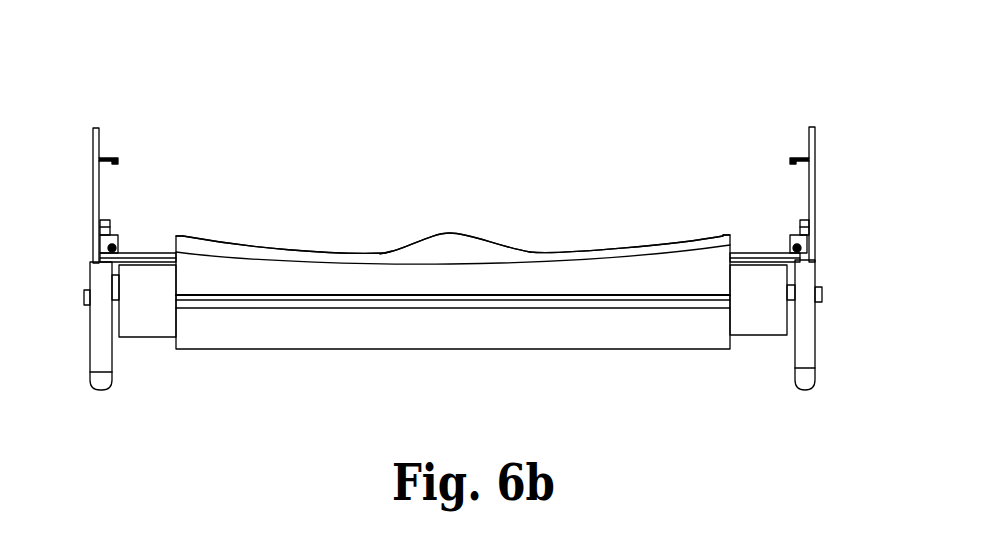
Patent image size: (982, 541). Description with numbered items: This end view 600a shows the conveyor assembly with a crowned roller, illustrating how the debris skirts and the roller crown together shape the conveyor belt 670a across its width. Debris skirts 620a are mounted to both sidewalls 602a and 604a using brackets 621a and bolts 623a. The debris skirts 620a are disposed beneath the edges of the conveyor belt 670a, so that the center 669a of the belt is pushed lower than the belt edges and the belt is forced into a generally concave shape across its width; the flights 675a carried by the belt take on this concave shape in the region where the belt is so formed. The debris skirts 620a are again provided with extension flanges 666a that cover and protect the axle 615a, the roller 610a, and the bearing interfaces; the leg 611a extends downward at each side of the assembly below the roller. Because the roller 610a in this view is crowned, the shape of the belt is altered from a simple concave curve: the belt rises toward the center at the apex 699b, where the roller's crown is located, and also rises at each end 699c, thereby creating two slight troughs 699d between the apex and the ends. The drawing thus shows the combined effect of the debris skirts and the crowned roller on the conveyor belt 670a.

The end view 600a is at (266, 78).
The sidewall 602a is at (93, 147).
The sidewall 604a is at (815, 152).
The roller 610a is at (162, 340).
The leg 611a is at (113, 328).
The axle 615a is at (84, 295).
The debris skirt 620a is at (142, 260).
The bracket 621a is at (104, 222).
The bolt 623a is at (110, 228).
The extension flange 666a is at (112, 292).
The center of the belt 669a is at (385, 248).
The conveyor belt 670a is at (288, 333).
The flight 675a is at (432, 300).
The apex 699b is at (450, 233).
The end 699c is at (183, 237).
The trough 699d is at (300, 247).